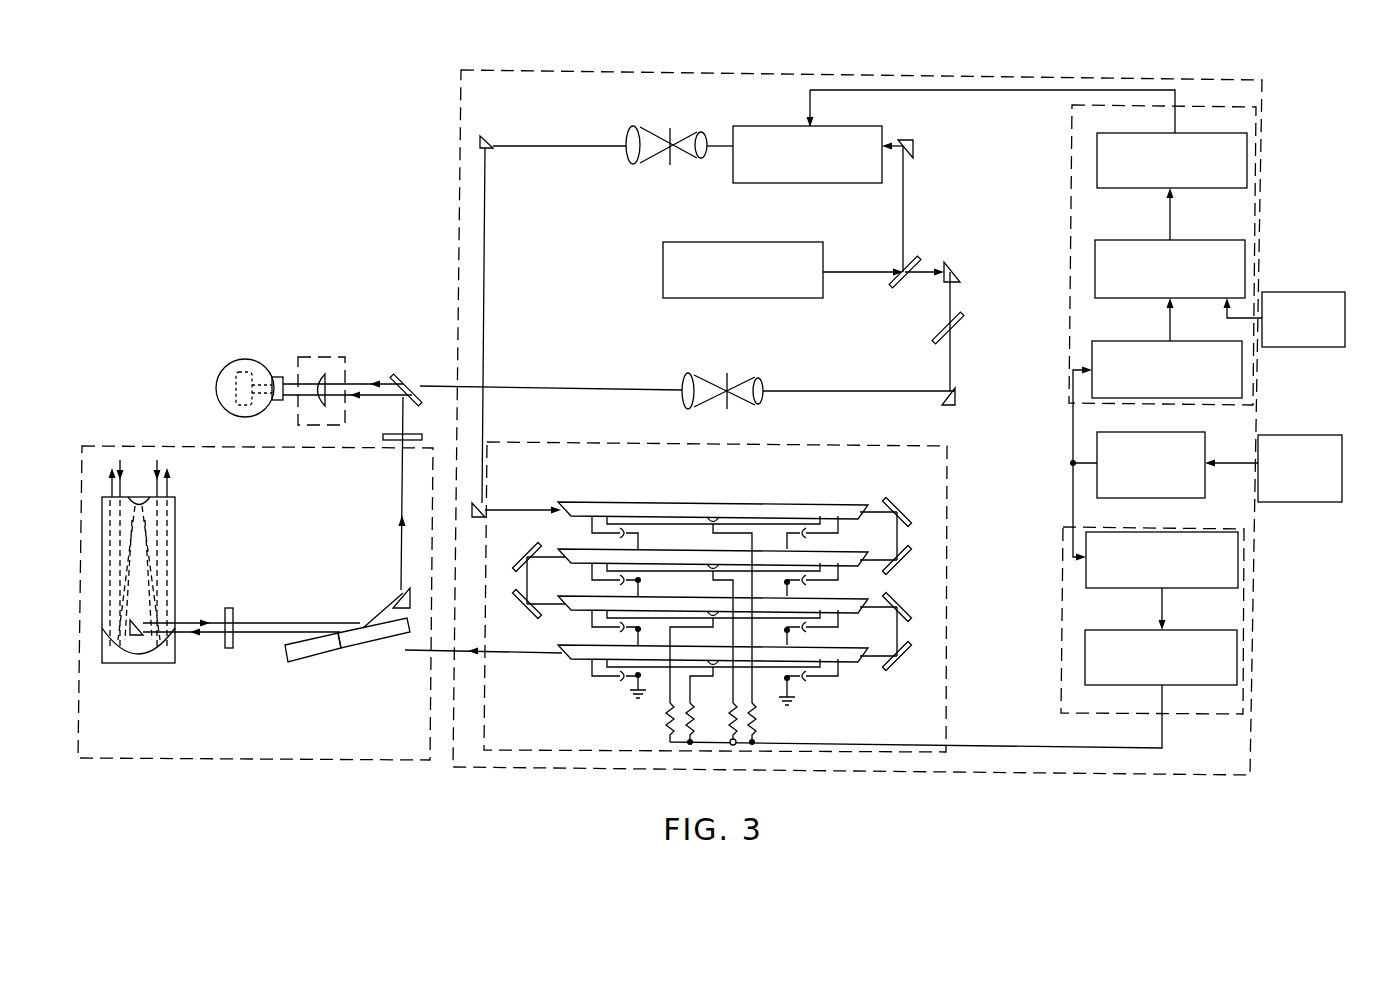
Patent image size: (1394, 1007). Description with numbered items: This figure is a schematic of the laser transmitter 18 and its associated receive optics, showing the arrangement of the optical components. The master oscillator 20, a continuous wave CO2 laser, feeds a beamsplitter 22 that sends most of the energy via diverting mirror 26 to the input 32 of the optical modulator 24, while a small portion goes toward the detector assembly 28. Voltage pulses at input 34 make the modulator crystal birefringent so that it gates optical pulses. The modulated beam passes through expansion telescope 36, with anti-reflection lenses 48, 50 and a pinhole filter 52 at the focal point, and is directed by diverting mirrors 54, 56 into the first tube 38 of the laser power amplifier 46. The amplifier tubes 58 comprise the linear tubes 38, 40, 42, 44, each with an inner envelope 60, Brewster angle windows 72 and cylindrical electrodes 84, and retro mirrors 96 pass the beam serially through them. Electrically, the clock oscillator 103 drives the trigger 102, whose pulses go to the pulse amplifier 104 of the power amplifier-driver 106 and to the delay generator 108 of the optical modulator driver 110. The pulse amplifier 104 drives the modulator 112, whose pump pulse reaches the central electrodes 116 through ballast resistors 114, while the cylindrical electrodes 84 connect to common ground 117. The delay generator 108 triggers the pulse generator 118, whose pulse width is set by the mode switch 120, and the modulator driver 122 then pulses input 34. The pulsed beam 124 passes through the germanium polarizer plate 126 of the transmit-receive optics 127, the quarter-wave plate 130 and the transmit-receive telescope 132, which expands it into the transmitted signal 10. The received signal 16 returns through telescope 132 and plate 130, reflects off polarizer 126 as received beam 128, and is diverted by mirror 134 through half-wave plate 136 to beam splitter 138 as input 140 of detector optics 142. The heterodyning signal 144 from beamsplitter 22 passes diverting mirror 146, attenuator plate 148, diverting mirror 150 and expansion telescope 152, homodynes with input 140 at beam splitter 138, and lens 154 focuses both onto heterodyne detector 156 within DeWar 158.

The transmitted signal 10 is at (111, 474).
The received signal 16 is at (162, 477).
The laser transmitter 18 is at (824, 70).
The master oscillator 20 is at (757, 240).
The beamsplitter 22 is at (898, 283).
The optical modulator 24 is at (780, 123).
The diverting mirror 26 is at (911, 152).
The detector assembly 28 is at (220, 400).
The input 32 is at (888, 146).
The input 34 is at (819, 126).
The expansion telescope 36 is at (682, 121).
The first tube 38 is at (694, 500).
The linear tube 40 is at (691, 548).
The linear tube 42 is at (691, 594).
The linear tube 44 is at (705, 645).
The laser power amplifier 46 is at (592, 442).
The anti-reflection lens 48 is at (703, 137).
The anti-reflection lens 50 is at (624, 134).
The pinhole filter 52 is at (672, 164).
The diverting mirror 54 is at (489, 138).
The diverting mirror 56 is at (484, 517).
The amplifier tubes 58 is at (858, 600).
The inner envelope 60 is at (590, 524).
The Brewster angle window 72 is at (555, 504).
The cylindrical electrode 84 is at (787, 583).
The retro mirrors 96 is at (909, 574).
The 200 hertz trigger 102 is at (1186, 454).
The 8 KHz oscillator 103 is at (1320, 433).
The pulse amplifier 104 is at (1148, 588).
The power amplifier-driver 106 is at (1060, 606).
The delay generator 108 is at (1145, 339).
The optical modulator driver 110 is at (1070, 212).
The modulator 112 is at (1142, 685).
The ballast resistors 114 is at (728, 731).
The central electrodes 116 is at (712, 671).
The common ground 117 is at (630, 690).
The pulse generator 118 is at (1146, 238).
The mode switch 120 is at (1318, 290).
The modulator driver 122 is at (1146, 132).
The pulsed beam 124 is at (410, 651).
The germanium polarizer plate 126 is at (292, 664).
The transmit-receive optics 127 is at (145, 444).
The received beam 128 is at (325, 623).
The quarter-wave plate 130 is at (235, 614).
The transmit-receive telescope 132 is at (176, 548).
The mirror 134 is at (398, 590).
The half-wave plate 136 is at (419, 435).
The beam splitter 138 is at (412, 370).
The input 140 is at (399, 396).
The detector optics 142 is at (322, 356).
The heterodyning signal 144 is at (538, 389).
The diverting mirror 146 is at (961, 266).
The attenuator plate 148 is at (964, 323).
The diverting mirror 150 is at (959, 402).
The expansion telescope 152 is at (740, 363).
The lens 154 is at (321, 399).
The heterodyne detector 156 is at (260, 407).
The DeWar 158 is at (249, 359).